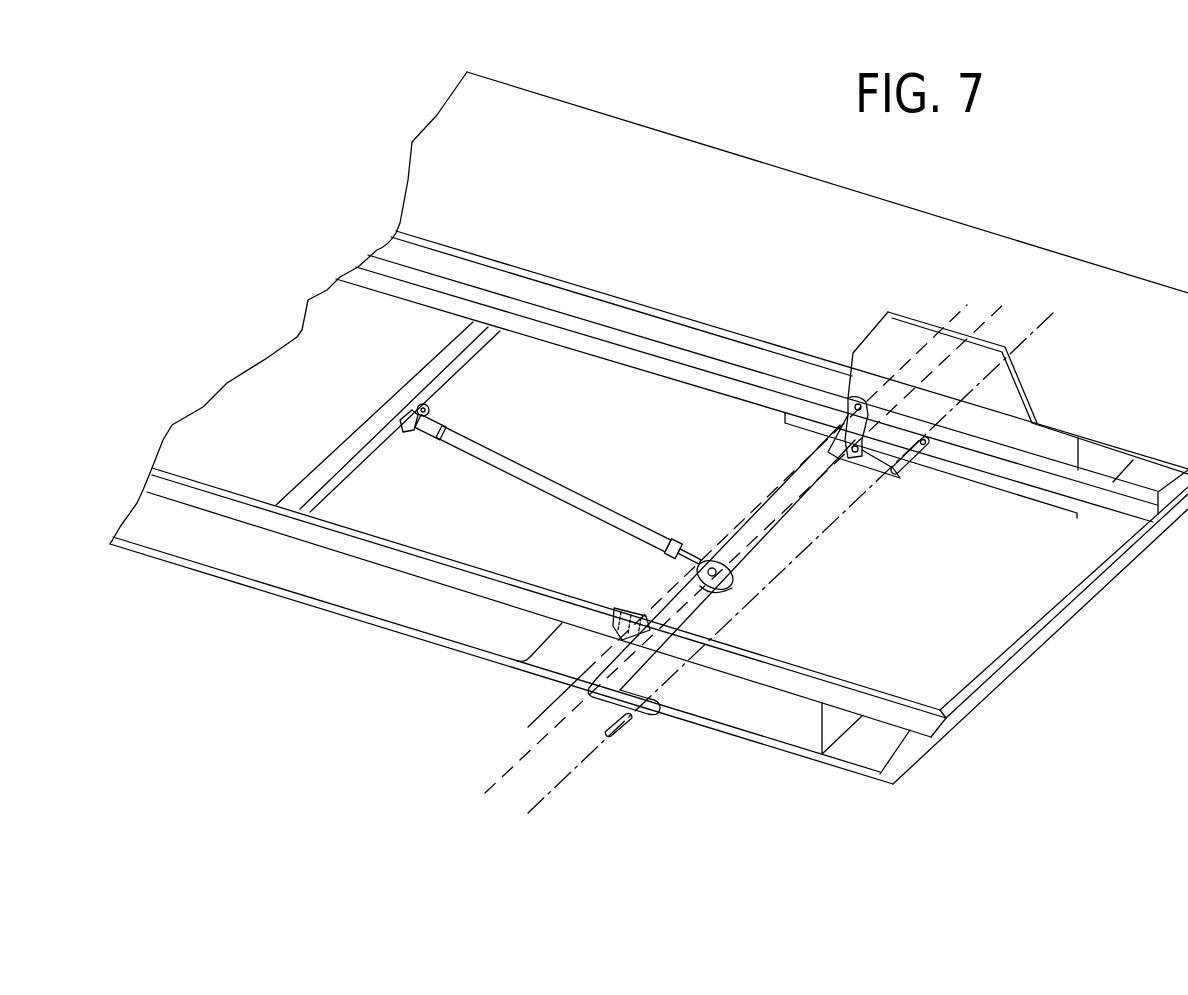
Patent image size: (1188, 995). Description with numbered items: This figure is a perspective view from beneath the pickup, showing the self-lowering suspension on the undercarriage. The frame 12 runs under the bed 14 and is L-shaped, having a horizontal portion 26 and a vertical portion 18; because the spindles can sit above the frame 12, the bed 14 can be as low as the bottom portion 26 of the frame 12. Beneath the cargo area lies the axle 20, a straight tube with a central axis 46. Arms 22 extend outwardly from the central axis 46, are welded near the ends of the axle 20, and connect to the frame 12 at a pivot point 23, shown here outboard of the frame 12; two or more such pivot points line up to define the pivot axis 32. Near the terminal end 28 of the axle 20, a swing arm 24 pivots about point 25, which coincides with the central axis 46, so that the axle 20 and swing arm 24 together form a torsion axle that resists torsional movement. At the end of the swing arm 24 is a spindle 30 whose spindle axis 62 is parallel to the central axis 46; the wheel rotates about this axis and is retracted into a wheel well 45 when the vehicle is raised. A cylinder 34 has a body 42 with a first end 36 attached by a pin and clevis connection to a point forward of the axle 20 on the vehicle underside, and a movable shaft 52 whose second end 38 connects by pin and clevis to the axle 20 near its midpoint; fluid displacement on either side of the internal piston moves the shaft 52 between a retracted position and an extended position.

The frame 12 is at (592, 362).
The bed 14 is at (627, 217).
The vertical portion 18 is at (682, 357).
The axle 20 is at (790, 528).
The arms 22 is at (848, 400).
The pivot point 23 is at (858, 400).
The swing arms 24 is at (878, 464).
The pivot point 25 is at (861, 470).
The horizontal portion 26 is at (727, 385).
The terminal end 28 is at (675, 720).
The spindle 30 is at (925, 468).
The pivot axis 32 is at (957, 318).
The cylinder 34 is at (568, 479).
The first end 36 is at (416, 445).
The second end 38 is at (705, 538).
The body 42 is at (593, 502).
The wheel wells 45 is at (890, 363).
The central axis 46 is at (1005, 322).
The shaft 52 is at (701, 560).
The spindle axis 62 is at (1022, 352).